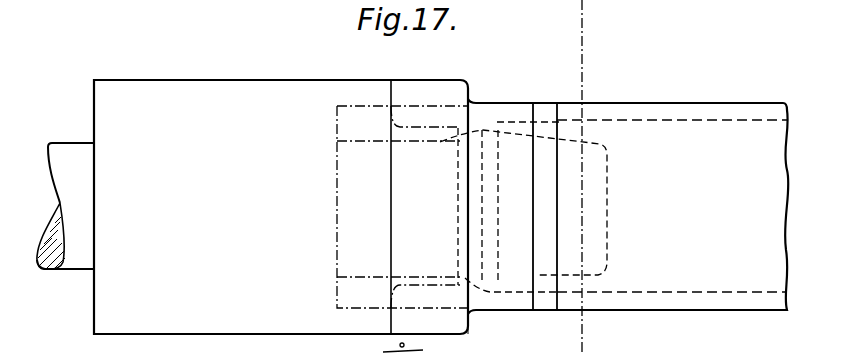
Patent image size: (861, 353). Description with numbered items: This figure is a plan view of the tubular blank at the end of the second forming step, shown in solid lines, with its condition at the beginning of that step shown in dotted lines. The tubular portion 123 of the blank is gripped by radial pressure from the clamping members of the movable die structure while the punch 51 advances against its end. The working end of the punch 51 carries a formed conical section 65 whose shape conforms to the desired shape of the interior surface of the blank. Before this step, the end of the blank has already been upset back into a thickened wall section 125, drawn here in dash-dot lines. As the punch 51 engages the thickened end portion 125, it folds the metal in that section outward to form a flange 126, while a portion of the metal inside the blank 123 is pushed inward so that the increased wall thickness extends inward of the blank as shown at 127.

The punch 51 is at (162, 83).
The tubular portion of the blank 123 is at (705, 135).
The thickened wall section 125 is at (365, 125).
The flange 126 is at (440, 90).
The inwardly extended thickened wall portion 127 is at (517, 133).
The formed conical section 65 is at (611, 165).